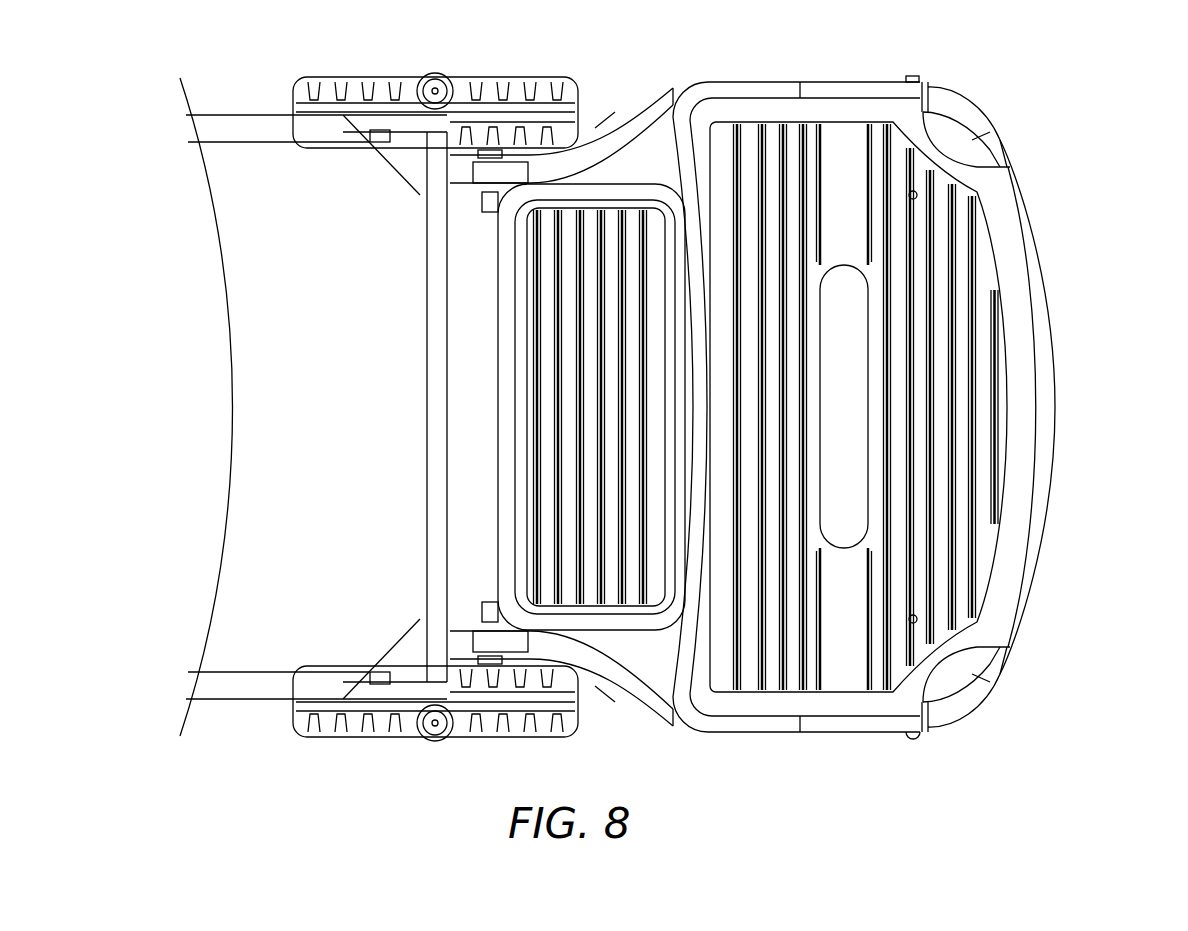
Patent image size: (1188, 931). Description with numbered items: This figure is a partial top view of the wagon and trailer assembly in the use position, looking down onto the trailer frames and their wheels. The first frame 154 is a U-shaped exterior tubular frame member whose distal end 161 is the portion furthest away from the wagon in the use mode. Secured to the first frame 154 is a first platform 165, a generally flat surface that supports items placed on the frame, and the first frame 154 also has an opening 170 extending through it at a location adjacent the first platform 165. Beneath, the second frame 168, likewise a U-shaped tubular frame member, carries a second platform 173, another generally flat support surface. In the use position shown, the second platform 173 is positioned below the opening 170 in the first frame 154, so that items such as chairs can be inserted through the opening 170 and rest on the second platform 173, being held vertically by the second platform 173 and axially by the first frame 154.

The first frame 154 is at (960, 110).
The distal end 161 is at (1043, 398).
The first platform 165 is at (960, 242).
The second frame 168 is at (608, 195).
The opening 170 is at (638, 150).
The second platform 173 is at (590, 588).